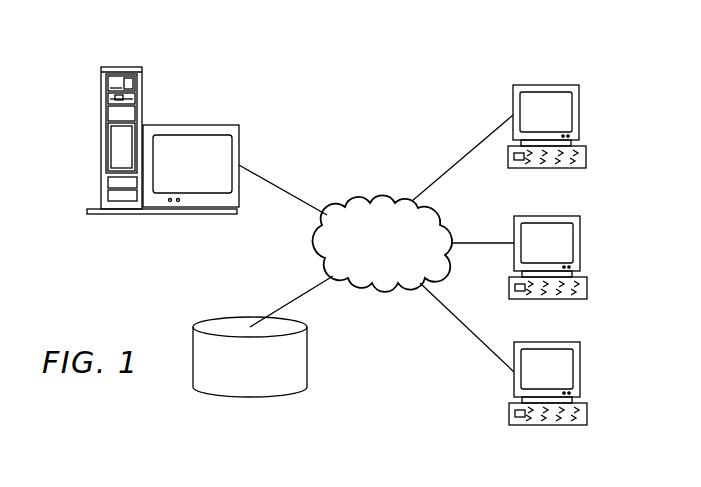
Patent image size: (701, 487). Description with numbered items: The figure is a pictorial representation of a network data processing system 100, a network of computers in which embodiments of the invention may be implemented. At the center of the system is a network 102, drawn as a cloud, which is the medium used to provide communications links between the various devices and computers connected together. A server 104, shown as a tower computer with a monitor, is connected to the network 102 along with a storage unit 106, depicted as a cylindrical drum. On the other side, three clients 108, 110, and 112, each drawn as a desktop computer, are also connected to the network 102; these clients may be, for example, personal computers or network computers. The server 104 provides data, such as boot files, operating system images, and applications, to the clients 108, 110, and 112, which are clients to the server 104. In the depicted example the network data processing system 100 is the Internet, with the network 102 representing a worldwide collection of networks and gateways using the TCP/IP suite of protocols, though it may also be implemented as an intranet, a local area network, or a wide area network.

The network data processing system 100 is at (432, 92).
The network 102 is at (357, 196).
The server 104 is at (100, 140).
The storage unit 106 is at (233, 397).
The client 108 is at (580, 113).
The client 110 is at (581, 243).
The client 112 is at (581, 370).